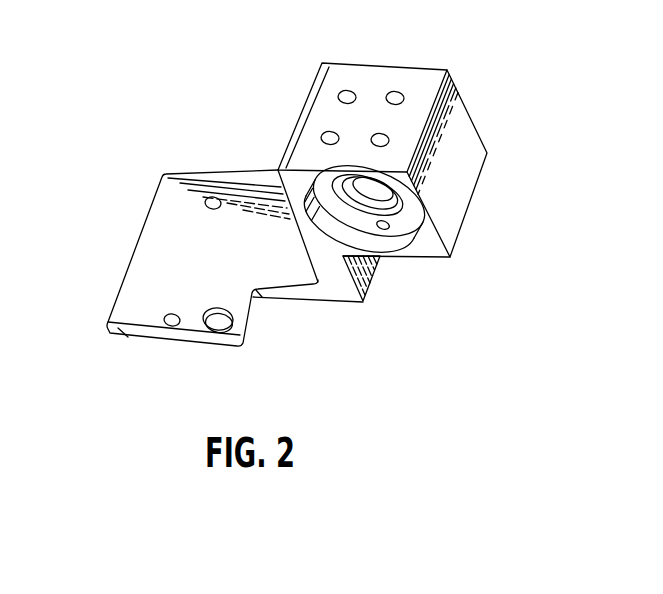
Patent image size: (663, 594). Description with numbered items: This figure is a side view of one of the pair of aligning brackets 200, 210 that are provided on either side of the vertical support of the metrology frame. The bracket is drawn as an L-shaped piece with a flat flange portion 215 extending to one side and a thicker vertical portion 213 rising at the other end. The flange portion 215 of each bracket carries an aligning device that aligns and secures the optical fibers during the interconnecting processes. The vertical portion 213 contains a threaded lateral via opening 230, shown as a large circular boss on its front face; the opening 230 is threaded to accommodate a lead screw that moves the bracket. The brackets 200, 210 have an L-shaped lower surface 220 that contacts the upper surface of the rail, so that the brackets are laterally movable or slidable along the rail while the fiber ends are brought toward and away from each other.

The aligning bracket 200 is at (292, 174).
The aligning bracket 210 is at (292, 174).
The vertical portion 213 is at (368, 100).
The flange portion 215 is at (178, 233).
The L-shaped lower surface 220 is at (409, 264).
The threaded lateral via opening 230 is at (402, 201).